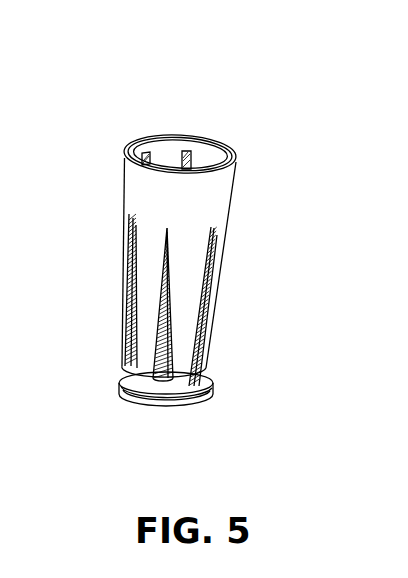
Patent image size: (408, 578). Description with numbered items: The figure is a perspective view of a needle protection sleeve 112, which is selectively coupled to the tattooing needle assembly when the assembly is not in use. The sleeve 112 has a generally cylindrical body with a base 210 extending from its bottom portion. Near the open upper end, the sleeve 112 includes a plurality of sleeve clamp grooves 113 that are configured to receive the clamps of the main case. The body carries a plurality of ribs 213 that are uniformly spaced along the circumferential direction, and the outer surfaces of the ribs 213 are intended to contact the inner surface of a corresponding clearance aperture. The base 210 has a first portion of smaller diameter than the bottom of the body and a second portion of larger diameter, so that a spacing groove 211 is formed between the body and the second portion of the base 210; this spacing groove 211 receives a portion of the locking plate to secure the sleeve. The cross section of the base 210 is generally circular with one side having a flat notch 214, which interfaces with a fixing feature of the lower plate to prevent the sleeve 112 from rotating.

The needle protection sleeve 112 is at (188, 194).
The sleeve clamp grooves 113 is at (190, 150).
The ribs 213 is at (125, 322).
The base 210 is at (208, 397).
The spacing groove 211 is at (125, 368).
The flat notch 214 is at (132, 395).